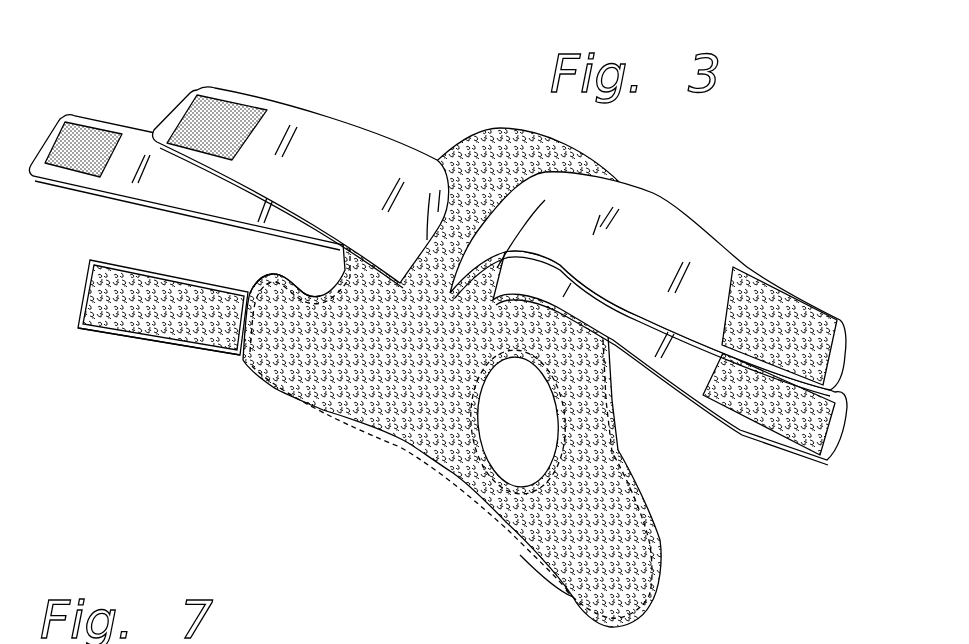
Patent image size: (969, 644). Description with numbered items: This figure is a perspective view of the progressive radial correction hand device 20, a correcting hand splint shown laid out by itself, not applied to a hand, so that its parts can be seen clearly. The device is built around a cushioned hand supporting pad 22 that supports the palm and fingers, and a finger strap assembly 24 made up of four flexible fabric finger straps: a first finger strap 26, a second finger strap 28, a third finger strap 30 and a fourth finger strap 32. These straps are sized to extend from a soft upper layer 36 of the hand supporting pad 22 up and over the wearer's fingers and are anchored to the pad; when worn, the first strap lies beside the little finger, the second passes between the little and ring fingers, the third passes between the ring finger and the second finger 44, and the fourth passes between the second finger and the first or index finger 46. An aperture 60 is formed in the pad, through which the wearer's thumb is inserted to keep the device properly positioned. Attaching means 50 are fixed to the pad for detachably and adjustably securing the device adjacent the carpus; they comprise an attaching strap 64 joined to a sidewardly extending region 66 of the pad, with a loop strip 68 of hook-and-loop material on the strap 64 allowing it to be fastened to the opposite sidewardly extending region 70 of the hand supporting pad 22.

In FIG. 3, the radial correction hand device 20 is at (489, 386).
In FIG. 3, the hand supporting pad 22 is at (668, 523).
In FIG. 3, the finger strap assembly 24 is at (655, 335).
In FIG. 3, the first finger strap 26 is at (55, 181).
In FIG. 3, the second finger strap 28 is at (232, 95).
In FIG. 3, the third finger strap 30 is at (705, 232).
In FIG. 3, the fourth finger strap 32 is at (827, 453).
In FIG. 3, the soft upper layer 36 is at (627, 563).
In FIG. 7, the second finger 44 is at (293, 640).
In FIG. 7, the first (index) finger 46 is at (373, 643).
In FIG. 3, the attaching means 50 is at (210, 370).
In FIG. 3, the aperture 60 is at (548, 418).
In FIG. 3, the attaching strap 64 is at (140, 339).
In FIG. 3, the sidewardly extending region 66 is at (300, 278).
In FIG. 3, the loop strip 68 is at (137, 323).
In FIG. 3, the opposite sidewardly extending region 70 is at (567, 590).